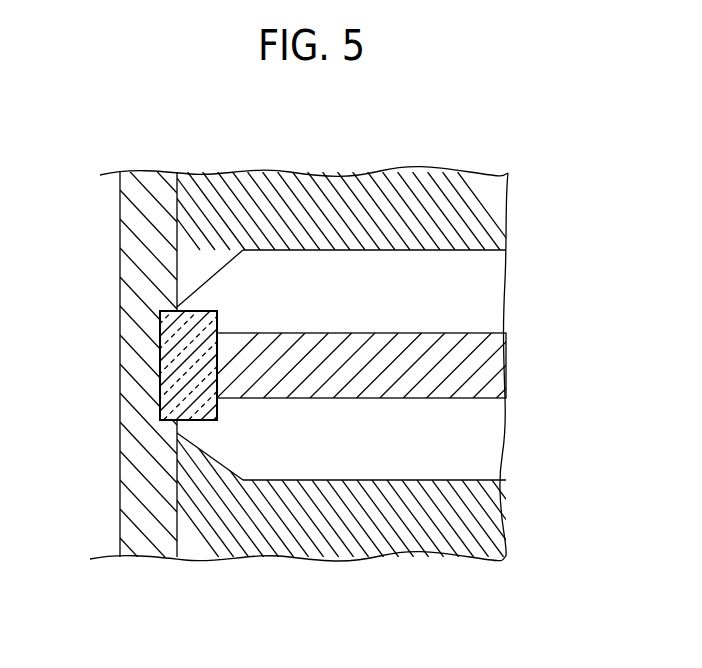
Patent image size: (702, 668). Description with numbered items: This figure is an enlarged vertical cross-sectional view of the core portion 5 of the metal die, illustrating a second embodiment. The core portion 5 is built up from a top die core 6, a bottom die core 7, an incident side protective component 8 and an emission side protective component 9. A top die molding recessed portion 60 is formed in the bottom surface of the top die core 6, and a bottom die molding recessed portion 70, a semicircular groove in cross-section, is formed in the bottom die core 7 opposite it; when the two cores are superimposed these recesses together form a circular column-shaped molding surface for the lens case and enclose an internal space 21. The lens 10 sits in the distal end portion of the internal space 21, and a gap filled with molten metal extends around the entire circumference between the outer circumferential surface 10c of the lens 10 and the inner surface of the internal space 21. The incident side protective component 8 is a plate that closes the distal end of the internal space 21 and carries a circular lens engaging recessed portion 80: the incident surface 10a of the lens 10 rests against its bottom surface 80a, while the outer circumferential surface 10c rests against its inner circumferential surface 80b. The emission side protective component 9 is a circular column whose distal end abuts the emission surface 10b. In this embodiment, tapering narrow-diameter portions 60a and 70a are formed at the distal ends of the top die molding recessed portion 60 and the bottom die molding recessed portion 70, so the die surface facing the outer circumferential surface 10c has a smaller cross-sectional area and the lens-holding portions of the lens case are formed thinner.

The core portion 5 is at (467, 148).
The top die core 6 is at (307, 180).
The top die molding recessed portion 60 is at (354, 250).
The narrow-diameter portion 60a is at (221, 266).
The internal space 21 is at (458, 272).
The emission side protective component 9 is at (470, 333).
The bottom die core 7 is at (318, 540).
The bottom die molding recessed portion 70 is at (371, 480).
The narrow-diameter portion 70a is at (223, 464).
The incident side protective component 8 is at (120, 452).
The lens 10 is at (192, 400).
The incident surface 10a is at (157, 345).
The emission surface 10b is at (218, 377).
The outer circumferential surface 10c is at (170, 308).
The lens engaging recessed portion 80 is at (180, 305).
The bottom surface 80a is at (164, 368).
The inner circumferential surface 80b is at (160, 417).